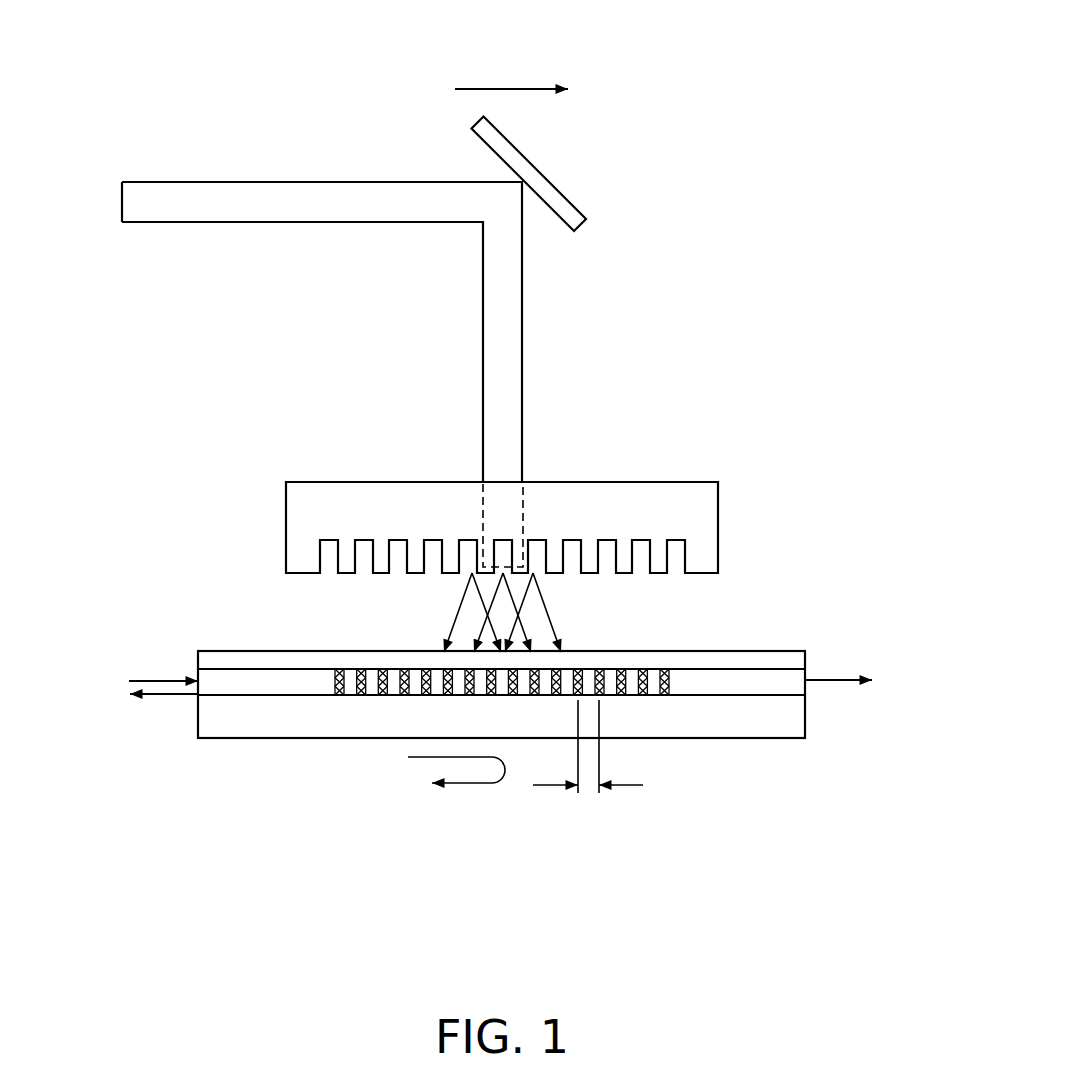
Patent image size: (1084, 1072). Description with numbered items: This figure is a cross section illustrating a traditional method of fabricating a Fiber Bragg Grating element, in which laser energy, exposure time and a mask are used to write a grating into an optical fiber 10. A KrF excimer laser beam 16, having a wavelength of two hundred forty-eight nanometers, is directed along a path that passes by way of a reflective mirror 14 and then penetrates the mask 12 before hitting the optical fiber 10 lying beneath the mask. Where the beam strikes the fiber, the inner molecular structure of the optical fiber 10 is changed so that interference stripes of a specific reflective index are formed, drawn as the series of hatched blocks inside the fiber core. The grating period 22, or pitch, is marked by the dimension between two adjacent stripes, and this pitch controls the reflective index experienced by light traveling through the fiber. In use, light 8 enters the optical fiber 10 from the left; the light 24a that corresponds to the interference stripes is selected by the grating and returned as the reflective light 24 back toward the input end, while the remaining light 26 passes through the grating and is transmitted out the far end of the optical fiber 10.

The light 8 is at (155, 680).
The optical fiber 10 is at (753, 680).
The mask 12 is at (672, 502).
The reflective mirror 14 is at (509, 90).
The KrF excimer laser beam 16 is at (278, 188).
The grating period 22 is at (589, 780).
The reflective light 24 is at (167, 697).
The light corresponding to the interference stripes 24a is at (436, 777).
The remaining light 26 is at (830, 678).